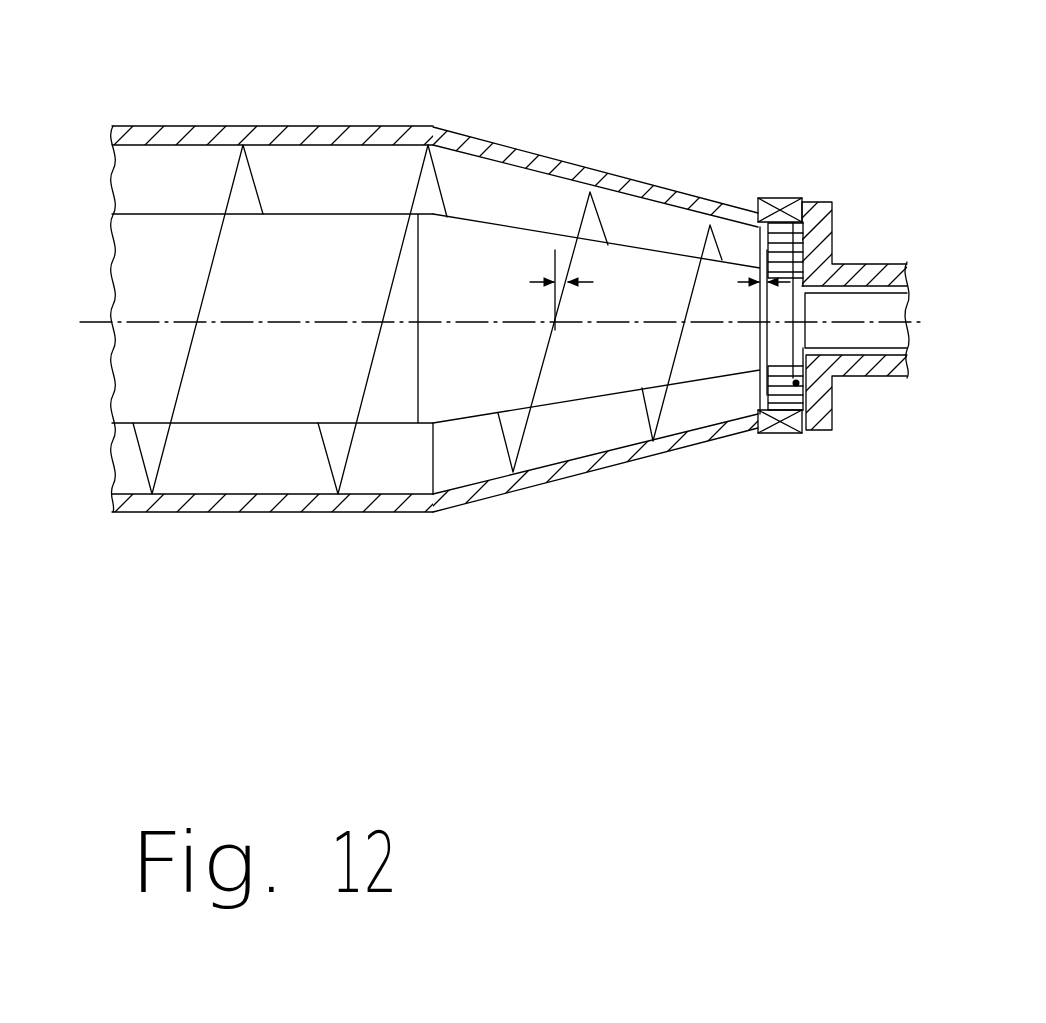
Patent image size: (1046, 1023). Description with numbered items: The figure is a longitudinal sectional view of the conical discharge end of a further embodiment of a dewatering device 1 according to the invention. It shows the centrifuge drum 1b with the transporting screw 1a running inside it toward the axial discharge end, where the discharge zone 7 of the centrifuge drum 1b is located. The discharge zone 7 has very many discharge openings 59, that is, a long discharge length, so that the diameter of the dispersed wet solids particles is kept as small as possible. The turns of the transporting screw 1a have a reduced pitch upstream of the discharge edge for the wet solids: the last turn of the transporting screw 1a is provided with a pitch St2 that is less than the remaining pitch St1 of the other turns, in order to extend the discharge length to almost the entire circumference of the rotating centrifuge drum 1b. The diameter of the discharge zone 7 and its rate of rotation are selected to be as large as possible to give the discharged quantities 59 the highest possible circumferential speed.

The dewatering device 1 is at (147, 512).
The transporting screw 1a is at (213, 423).
The centrifuge drum 1b is at (372, 512).
The discharge zone 7 is at (781, 446).
The discharge openings 59 is at (800, 384).
The remaining pitch St1 is at (562, 260).
The pitch of the last turn St2 is at (756, 262).